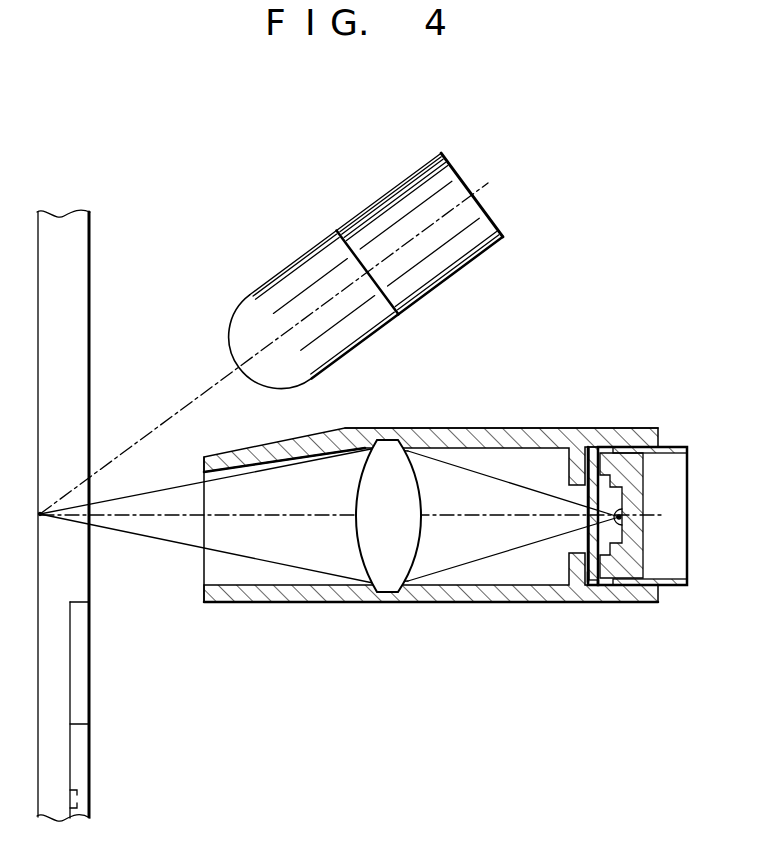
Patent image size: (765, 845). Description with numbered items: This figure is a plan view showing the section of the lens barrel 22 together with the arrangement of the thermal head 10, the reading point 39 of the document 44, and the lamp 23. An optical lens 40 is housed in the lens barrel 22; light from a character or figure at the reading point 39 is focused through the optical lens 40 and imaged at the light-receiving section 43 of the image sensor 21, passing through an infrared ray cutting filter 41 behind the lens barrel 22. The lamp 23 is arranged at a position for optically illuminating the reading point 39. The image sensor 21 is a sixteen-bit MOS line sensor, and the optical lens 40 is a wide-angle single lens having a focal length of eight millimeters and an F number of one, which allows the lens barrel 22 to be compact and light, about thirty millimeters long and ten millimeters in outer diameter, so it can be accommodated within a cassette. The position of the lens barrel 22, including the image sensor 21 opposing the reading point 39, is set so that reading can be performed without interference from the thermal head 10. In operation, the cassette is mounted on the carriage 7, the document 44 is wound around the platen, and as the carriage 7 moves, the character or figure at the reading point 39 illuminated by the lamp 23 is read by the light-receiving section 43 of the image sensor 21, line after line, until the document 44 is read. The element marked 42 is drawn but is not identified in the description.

The carriage 7 is at (88, 262).
The document 44 is at (38, 247).
The thermal head 10 is at (82, 762).
The reading point 39 is at (40, 516).
The lamp 23 is at (457, 258).
The lens barrel 22 is at (523, 438).
The optical lens 40 is at (407, 547).
The plate 42 is at (595, 447).
The infrared ray cutting filter 41 is at (597, 584).
The image sensor 21 is at (633, 491).
The light-receiving section 43 is at (617, 527).